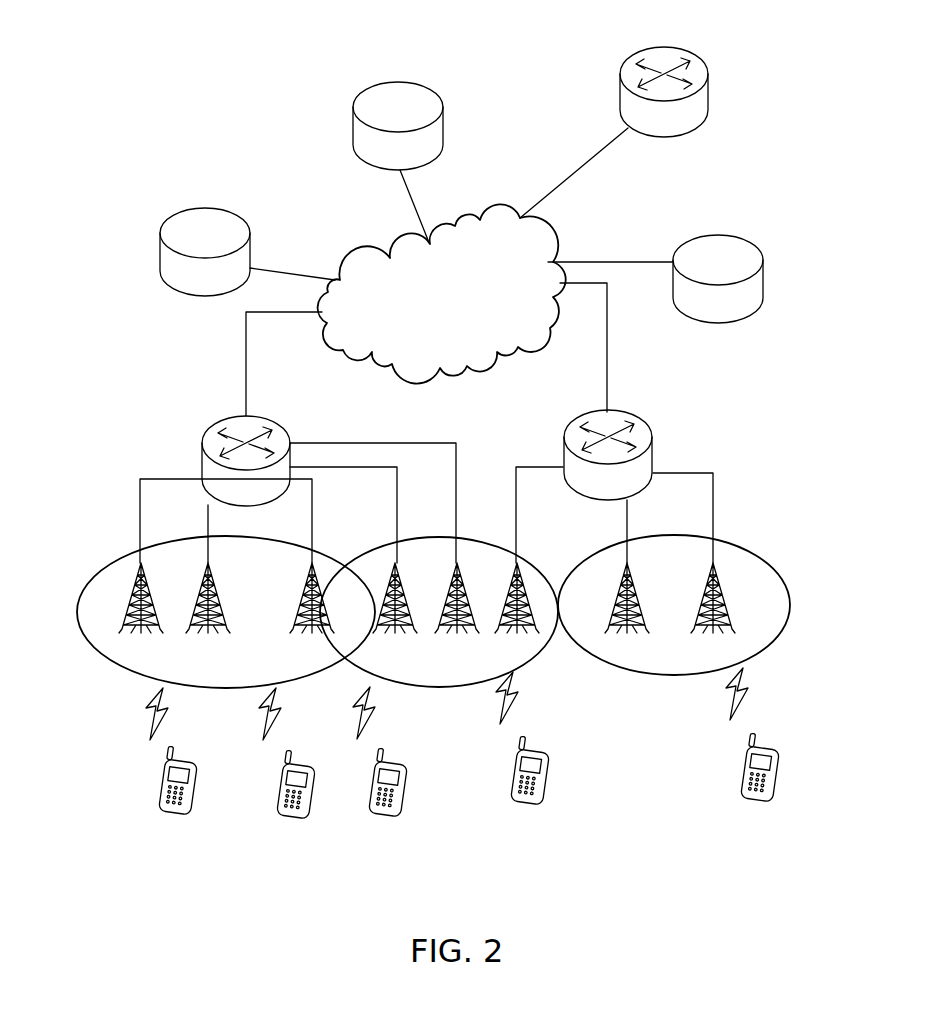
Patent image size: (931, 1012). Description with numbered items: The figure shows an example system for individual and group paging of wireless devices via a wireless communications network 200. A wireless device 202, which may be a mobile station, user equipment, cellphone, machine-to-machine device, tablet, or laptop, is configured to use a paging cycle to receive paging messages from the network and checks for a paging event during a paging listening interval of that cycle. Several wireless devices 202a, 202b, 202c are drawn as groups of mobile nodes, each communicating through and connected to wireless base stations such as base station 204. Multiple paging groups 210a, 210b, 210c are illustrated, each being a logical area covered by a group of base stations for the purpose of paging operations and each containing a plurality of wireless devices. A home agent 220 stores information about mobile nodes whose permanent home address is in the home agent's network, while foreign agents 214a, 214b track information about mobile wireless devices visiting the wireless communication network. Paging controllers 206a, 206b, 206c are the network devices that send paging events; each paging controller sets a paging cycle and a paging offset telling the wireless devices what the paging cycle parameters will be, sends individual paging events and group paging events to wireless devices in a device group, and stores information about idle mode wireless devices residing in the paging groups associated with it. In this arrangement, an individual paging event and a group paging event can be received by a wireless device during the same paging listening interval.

The wireless communications network 200 is at (173, 28).
The wireless device 202 is at (185, 815).
The mobile nodes of paging group PG1 202a is at (97, 655).
The mobile nodes of paging group PG2 202b is at (458, 688).
The mobile nodes of paging group PG3 202c is at (632, 676).
The base station 204 is at (134, 601).
The paging controller 206a is at (160, 247).
The paging controller 206b is at (353, 124).
The paging controller 206c is at (745, 318).
The paging group 210a is at (118, 557).
The paging group 210b is at (478, 540).
The paging group 210c is at (783, 580).
The foreign agent 214a is at (202, 440).
The foreign agent 214b is at (655, 433).
The home agent 220 is at (620, 86).